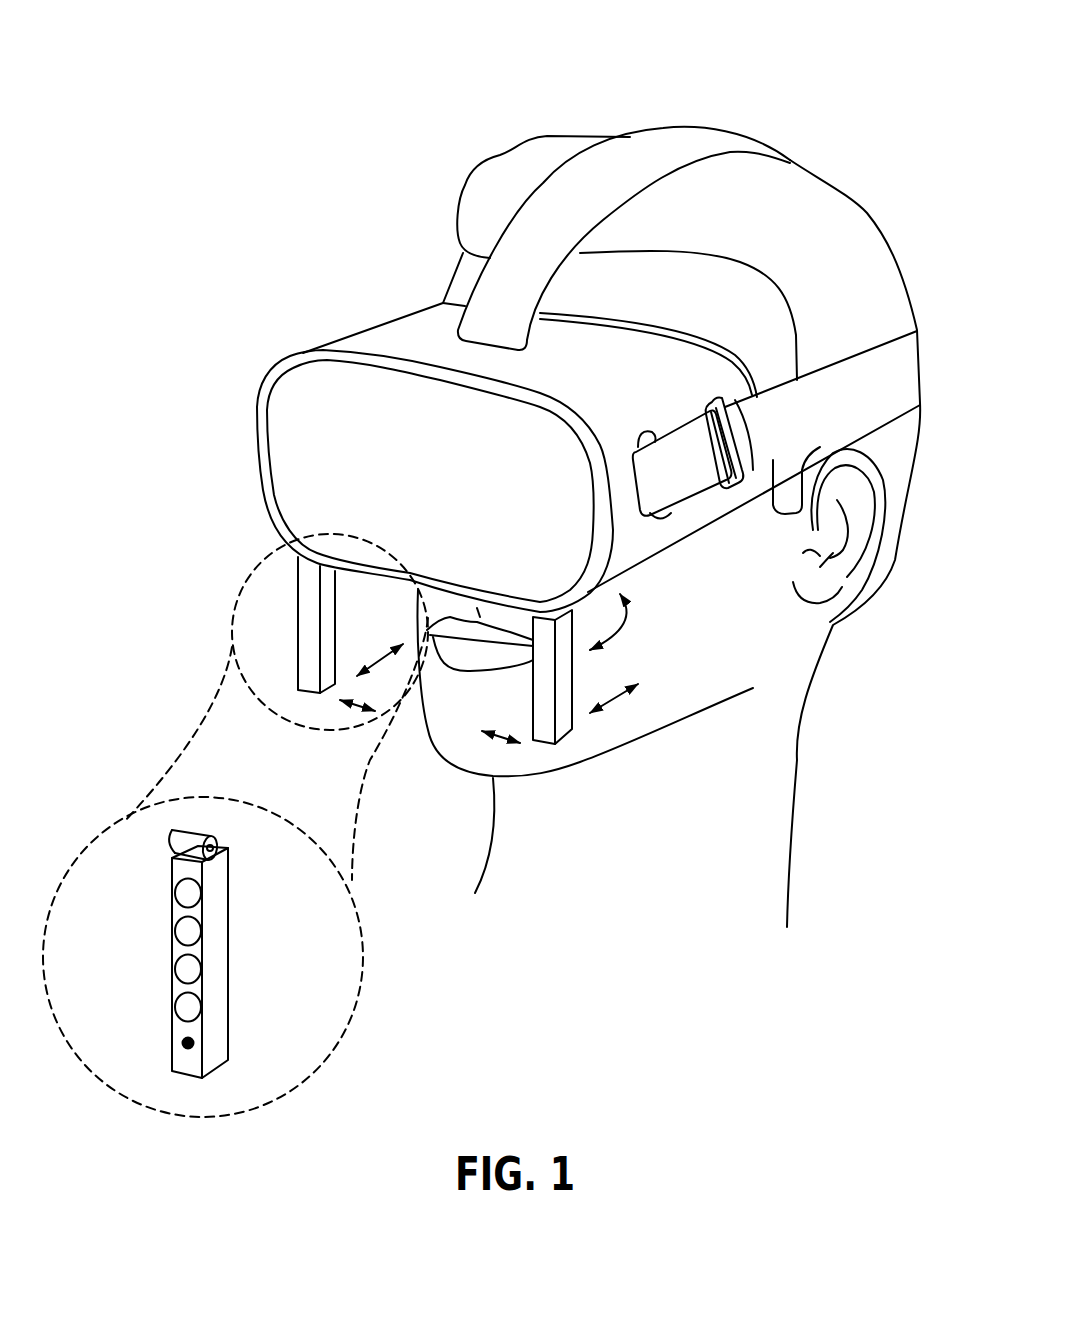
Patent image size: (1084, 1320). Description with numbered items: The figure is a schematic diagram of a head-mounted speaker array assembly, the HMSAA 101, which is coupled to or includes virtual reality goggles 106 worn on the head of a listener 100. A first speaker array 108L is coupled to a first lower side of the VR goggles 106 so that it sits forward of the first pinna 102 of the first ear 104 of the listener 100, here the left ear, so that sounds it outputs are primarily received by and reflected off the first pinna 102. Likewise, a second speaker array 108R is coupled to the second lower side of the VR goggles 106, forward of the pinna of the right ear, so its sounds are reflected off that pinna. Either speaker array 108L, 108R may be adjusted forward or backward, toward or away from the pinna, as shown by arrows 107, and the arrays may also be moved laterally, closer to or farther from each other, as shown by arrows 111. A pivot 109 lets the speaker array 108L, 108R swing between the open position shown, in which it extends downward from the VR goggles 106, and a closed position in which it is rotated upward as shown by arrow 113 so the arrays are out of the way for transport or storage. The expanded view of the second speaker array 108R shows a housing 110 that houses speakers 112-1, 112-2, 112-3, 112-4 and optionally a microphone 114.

The listener 100 is at (803, 92).
The HMSAA 101 is at (200, 345).
The first pinna 102 is at (880, 503).
The first ear 104 is at (882, 446).
The virtual reality goggles 106 is at (372, 345).
The arrows 107 is at (377, 661).
The second speaker array 108R is at (300, 617).
The first speaker array 108L is at (578, 688).
The pivot 109 is at (167, 840).
The housing 110 is at (217, 1050).
The arrows 111 is at (354, 708).
The speaker 112-1 is at (190, 890).
The speaker 112-2 is at (190, 931).
The speaker 112-3 is at (190, 969).
The speaker 112-4 is at (190, 1008).
The arrow 113 is at (620, 620).
The microphone 114 is at (189, 1048).